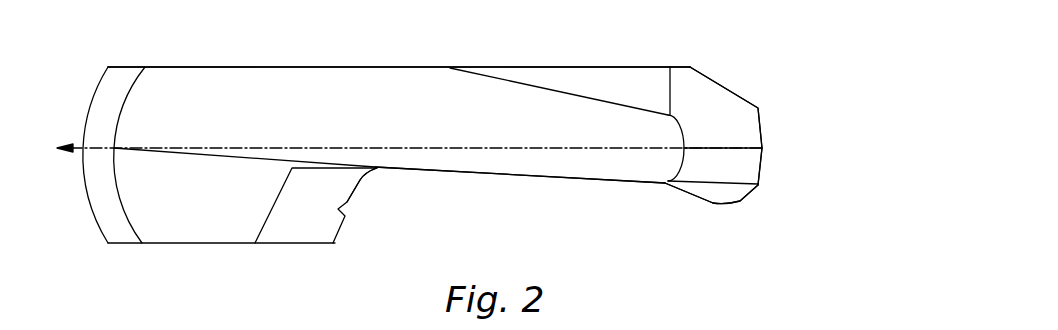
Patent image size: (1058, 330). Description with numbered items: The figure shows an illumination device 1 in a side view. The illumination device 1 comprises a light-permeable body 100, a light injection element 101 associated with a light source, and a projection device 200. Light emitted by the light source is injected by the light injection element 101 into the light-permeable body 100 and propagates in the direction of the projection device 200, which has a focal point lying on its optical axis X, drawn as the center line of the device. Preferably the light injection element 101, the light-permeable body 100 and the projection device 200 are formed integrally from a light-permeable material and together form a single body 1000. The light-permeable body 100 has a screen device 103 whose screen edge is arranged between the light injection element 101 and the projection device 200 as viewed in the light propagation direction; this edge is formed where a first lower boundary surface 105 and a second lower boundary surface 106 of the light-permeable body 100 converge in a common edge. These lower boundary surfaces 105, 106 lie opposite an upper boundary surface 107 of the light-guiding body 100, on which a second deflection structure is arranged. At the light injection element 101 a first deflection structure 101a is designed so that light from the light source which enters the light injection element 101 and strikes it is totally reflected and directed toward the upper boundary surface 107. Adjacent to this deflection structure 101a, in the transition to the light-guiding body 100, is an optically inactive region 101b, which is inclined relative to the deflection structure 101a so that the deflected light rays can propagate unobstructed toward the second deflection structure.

The illumination device 1 is at (156, 48).
The optical axis X is at (401, 163).
The projection device 200 is at (83, 182).
The upper boundary surface 107 is at (392, 64).
The body 1000 is at (418, 107).
The light-permeable body 100 is at (506, 124).
The light injection element 101 is at (740, 122).
The first deflection structure 101a is at (722, 197).
The optically inactive region 101b is at (690, 195).
The screen device 103 is at (349, 189).
The first lower boundary surface 105 is at (390, 172).
The second lower boundary surface 106 is at (465, 172).